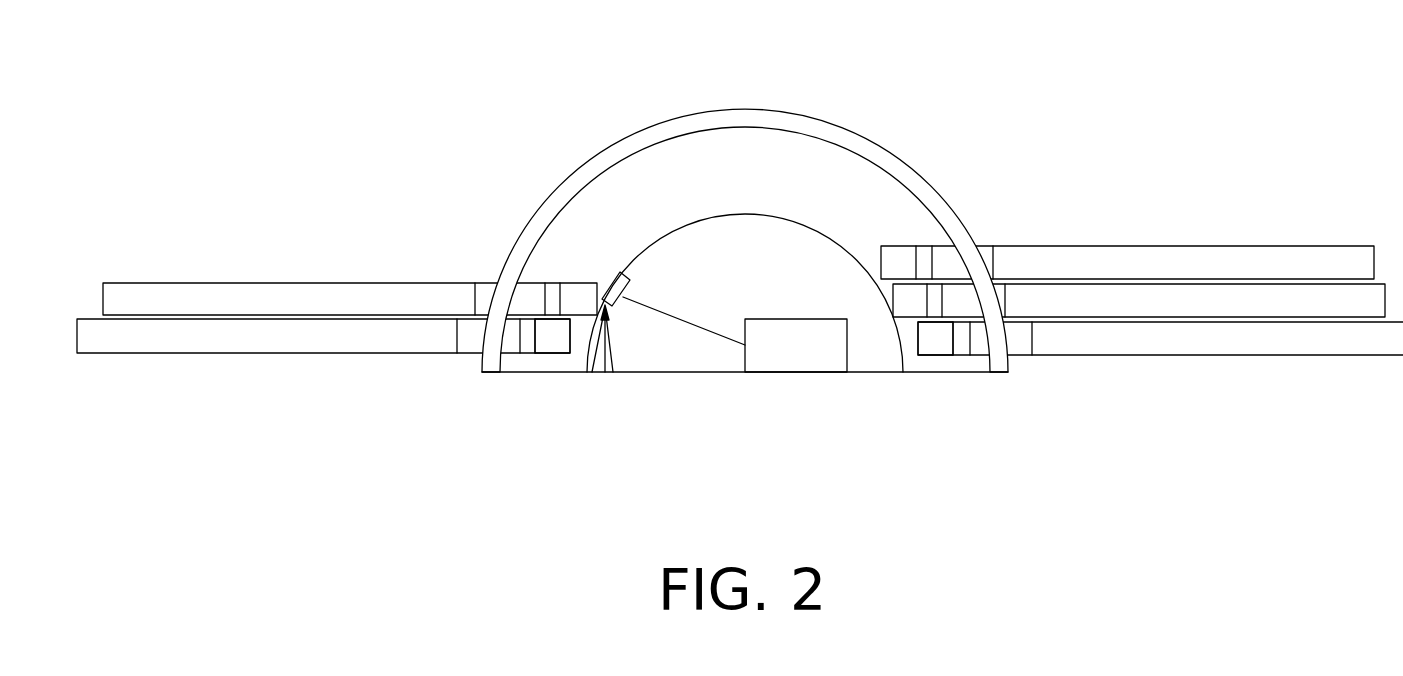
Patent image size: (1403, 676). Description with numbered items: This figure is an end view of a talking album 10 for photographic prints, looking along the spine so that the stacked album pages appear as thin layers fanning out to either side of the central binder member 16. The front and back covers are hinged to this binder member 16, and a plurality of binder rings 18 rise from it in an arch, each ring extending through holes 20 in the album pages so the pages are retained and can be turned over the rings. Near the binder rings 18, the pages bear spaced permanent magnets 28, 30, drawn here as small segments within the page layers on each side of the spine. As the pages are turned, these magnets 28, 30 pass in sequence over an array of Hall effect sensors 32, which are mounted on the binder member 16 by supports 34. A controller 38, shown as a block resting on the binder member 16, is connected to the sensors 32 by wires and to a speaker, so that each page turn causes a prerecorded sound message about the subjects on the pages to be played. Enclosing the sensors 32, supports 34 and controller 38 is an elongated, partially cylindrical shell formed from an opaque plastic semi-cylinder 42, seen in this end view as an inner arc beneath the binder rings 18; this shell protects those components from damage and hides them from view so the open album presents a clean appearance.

The talking album 10 is at (1126, 190).
The binder member 16 is at (715, 372).
The binder rings 18 is at (748, 120).
The holes 20 is at (362, 353).
The permanent magnet 28 is at (552, 338).
The permanent magnet 30 is at (928, 337).
The Hall effect sensors 32 is at (621, 296).
The supports 34 is at (613, 348).
The controller 38 is at (847, 347).
The opaque plastic semi-cylinder 42 is at (712, 215).